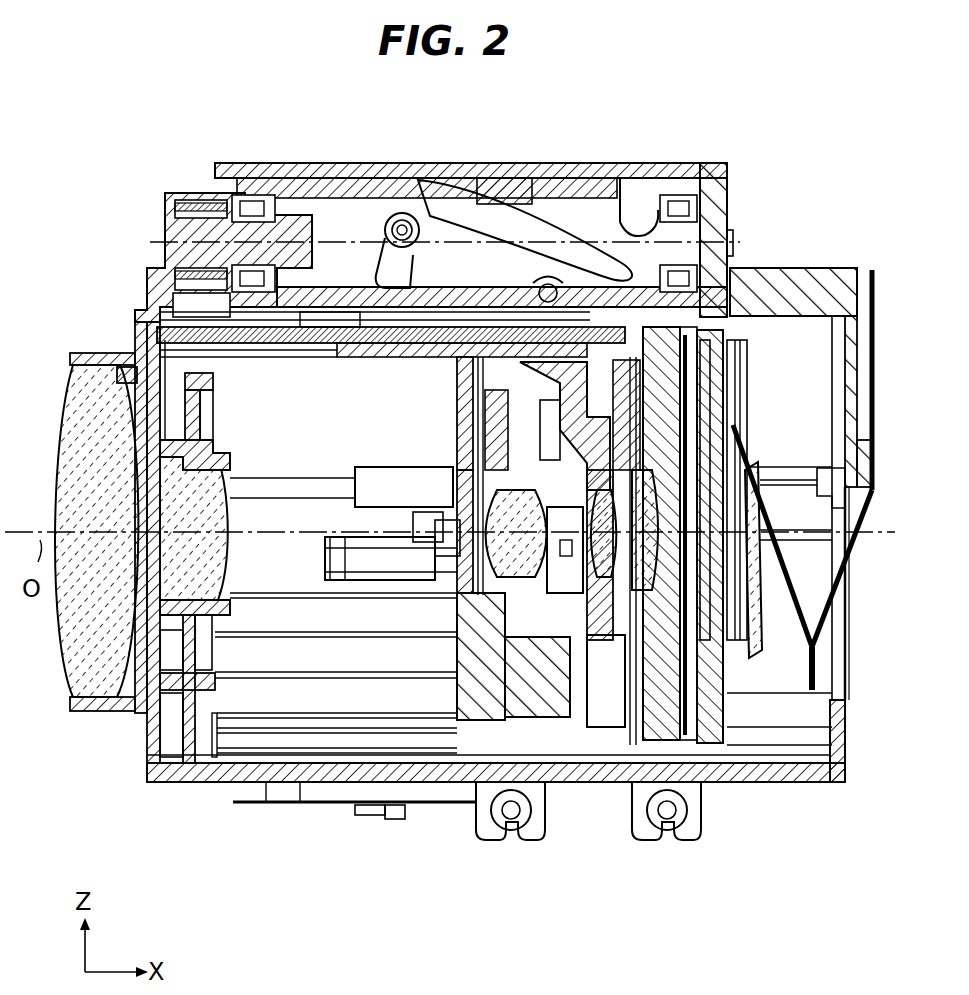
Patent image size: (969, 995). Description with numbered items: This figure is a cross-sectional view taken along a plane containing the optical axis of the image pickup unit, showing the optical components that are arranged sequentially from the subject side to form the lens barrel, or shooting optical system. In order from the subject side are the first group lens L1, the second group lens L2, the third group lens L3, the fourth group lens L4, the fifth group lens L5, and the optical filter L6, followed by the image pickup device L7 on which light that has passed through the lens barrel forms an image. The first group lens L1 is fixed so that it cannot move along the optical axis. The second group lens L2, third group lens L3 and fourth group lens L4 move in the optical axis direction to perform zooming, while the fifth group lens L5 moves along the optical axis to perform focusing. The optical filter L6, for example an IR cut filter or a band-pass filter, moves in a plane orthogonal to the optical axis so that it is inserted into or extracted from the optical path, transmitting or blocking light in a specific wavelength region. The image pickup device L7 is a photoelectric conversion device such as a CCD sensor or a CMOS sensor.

The first group lens L1 is at (97, 680).
The second group lens L2 is at (203, 587).
The third group lens L3 is at (512, 557).
The fourth group lens L4 is at (603, 550).
The fifth group lens L5 is at (642, 552).
The optical filter L6 is at (700, 368).
The image pickup device L7 is at (727, 480).